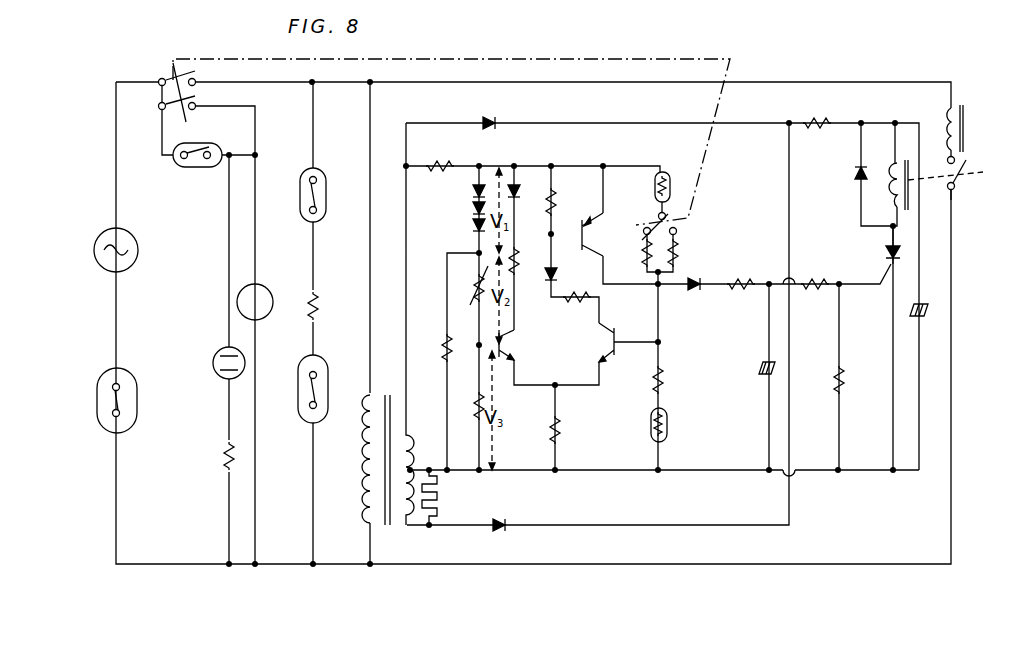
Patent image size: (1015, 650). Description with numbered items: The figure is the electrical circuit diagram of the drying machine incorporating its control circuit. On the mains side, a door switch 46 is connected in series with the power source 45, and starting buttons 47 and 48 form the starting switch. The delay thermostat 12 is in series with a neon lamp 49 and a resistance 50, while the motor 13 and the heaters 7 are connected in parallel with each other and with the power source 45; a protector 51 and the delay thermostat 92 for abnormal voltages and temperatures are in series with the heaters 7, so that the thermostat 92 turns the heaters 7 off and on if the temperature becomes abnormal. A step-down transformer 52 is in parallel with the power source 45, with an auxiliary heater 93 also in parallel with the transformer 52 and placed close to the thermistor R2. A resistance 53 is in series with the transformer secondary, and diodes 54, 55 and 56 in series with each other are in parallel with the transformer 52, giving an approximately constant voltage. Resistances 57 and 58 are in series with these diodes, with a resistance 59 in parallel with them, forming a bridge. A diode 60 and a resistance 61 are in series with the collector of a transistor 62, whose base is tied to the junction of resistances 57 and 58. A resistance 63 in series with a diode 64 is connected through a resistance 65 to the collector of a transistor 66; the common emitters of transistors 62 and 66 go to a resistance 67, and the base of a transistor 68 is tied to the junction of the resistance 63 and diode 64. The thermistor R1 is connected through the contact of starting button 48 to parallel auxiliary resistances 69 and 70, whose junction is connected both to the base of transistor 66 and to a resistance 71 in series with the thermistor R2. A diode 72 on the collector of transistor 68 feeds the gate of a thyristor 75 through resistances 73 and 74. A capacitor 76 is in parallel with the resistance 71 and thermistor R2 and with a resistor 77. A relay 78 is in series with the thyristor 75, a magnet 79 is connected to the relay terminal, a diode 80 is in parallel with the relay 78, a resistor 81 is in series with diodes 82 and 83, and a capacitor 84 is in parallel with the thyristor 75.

The heaters 7 is at (320, 300).
The delay thermostat 12 is at (195, 168).
The motor 13 is at (264, 288).
The power source 45 is at (94, 248).
The door switch 46 is at (100, 386).
The starting button 47 is at (167, 78).
The starting button 48 is at (652, 218).
The neon lamp 49 is at (212, 363).
The resistance 50 is at (224, 446).
The protector 51 is at (298, 410).
The step-down transformer 52 is at (365, 448).
The resistance 53 is at (440, 161).
The diode 54 is at (472, 193).
The diode 55 is at (472, 209).
The diode 56 is at (472, 226).
The resistance 57 is at (472, 280).
The resistance 58 is at (476, 412).
The resistance 59 is at (430, 350).
The diode 60 is at (517, 191).
The resistance 61 is at (523, 253).
The transistor 62 is at (518, 355).
The resistance 63 is at (556, 210).
The diode 64 is at (564, 262).
The resistance 65 is at (577, 300).
The transistor 66 is at (598, 348).
The resistance 67 is at (559, 432).
The transistor 68 is at (590, 240).
The auxiliary resistance 69 is at (643, 250).
The auxiliary resistance 70 is at (677, 252).
The resistance 71 is at (661, 368).
The diode 72 is at (695, 291).
The resistance 73 is at (738, 280).
The resistance 74 is at (810, 280).
The thyristor 75 is at (885, 257).
The capacitor 76 is at (762, 366).
The resistor 77 is at (842, 370).
The relay 78 is at (909, 184).
The magnet 79 is at (966, 128).
The diode 80 is at (855, 174).
The resistor 81 is at (818, 118).
The diode 82 is at (495, 121).
The diode 83 is at (508, 528).
The capacitor 84 is at (930, 310).
The delay thermostat 92 is at (326, 196).
The auxiliary heater 93 is at (437, 506).
The thermistor R1 is at (670, 186).
The thermistor R2 is at (667, 420).